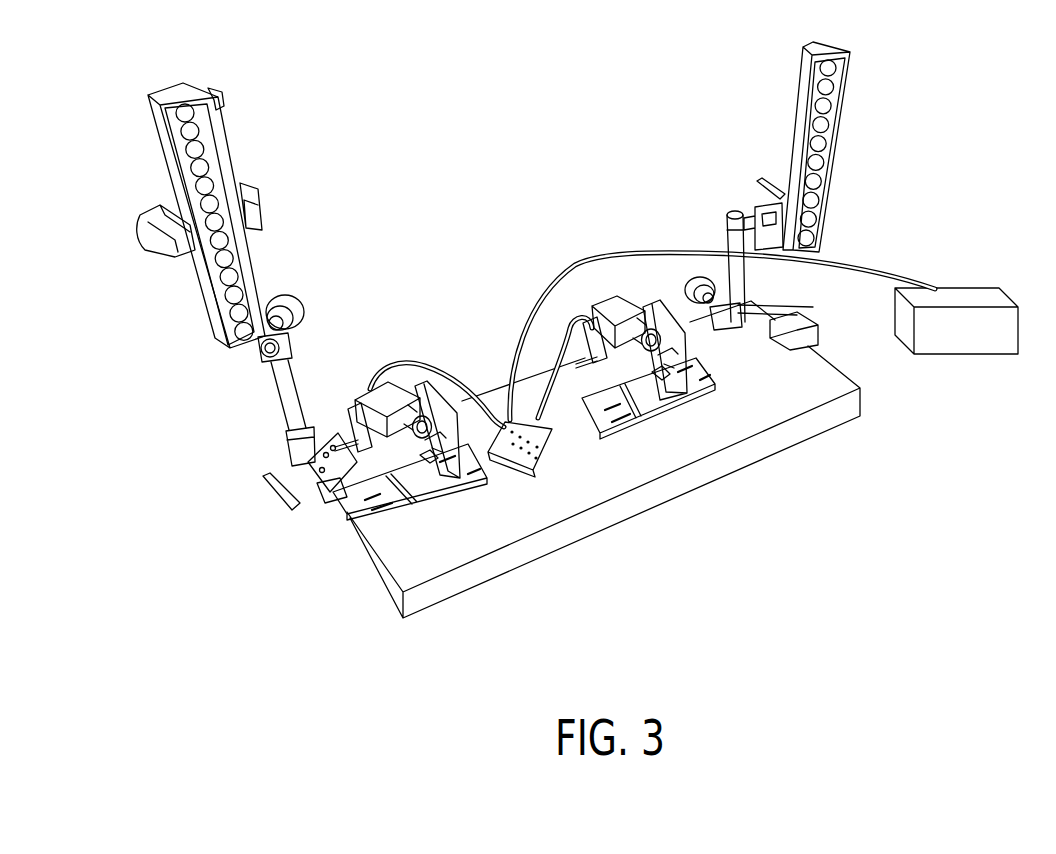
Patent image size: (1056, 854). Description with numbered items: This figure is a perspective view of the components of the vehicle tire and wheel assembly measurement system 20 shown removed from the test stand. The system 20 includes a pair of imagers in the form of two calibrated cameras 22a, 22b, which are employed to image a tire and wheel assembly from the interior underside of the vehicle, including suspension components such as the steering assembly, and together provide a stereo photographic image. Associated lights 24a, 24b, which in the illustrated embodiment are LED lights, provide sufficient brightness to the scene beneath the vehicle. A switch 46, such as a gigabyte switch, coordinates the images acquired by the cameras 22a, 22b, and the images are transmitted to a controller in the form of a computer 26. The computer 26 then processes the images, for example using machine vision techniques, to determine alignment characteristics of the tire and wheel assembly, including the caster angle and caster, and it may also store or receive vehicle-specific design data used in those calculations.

The vehicle tire and wheel assembly measurement system 20 is at (776, 456).
The camera 22a is at (367, 386).
The camera 22b is at (618, 312).
The light 24a is at (232, 140).
The light 24b is at (791, 115).
The computer 26 is at (1011, 300).
The switch 46 is at (515, 477).